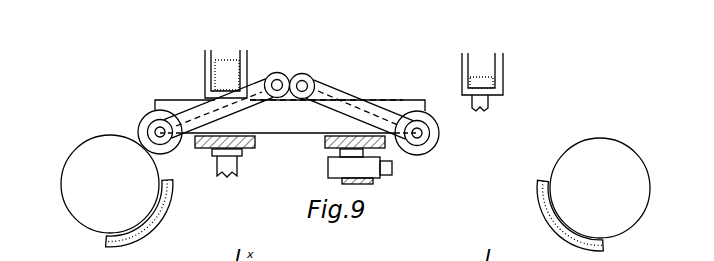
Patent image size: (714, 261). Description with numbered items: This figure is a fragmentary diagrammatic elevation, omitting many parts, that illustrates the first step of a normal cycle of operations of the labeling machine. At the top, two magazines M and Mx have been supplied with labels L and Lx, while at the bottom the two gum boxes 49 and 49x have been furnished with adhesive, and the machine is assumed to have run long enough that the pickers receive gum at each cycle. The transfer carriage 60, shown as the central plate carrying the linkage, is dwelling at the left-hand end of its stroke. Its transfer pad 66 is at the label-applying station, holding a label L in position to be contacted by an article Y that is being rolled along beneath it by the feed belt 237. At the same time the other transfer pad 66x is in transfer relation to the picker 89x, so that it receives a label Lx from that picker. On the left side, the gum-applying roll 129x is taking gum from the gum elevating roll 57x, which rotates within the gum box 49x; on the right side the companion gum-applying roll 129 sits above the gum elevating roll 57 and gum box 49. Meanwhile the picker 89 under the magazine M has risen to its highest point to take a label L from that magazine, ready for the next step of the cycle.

The transfer carriage 60 is at (408, 92).
The gum-applying roll 129x is at (143, 118).
The gum-applying roll 129 is at (440, 133).
The magazine Mx is at (188, 73).
The magazine M is at (515, 88).
The label Lx is at (201, 170).
The label L is at (482, 72).
The picker 89x is at (213, 157).
The picker 89 is at (487, 107).
The transfer pad 66x is at (240, 152).
The transfer pad 66 is at (337, 152).
The article Y is at (337, 177).
The feed belt 237 is at (373, 181).
The gum elevating roll 57x is at (72, 163).
The gum elevating roll 57 is at (601, 147).
The gum box 49x is at (147, 232).
The gum box 49 is at (530, 203).